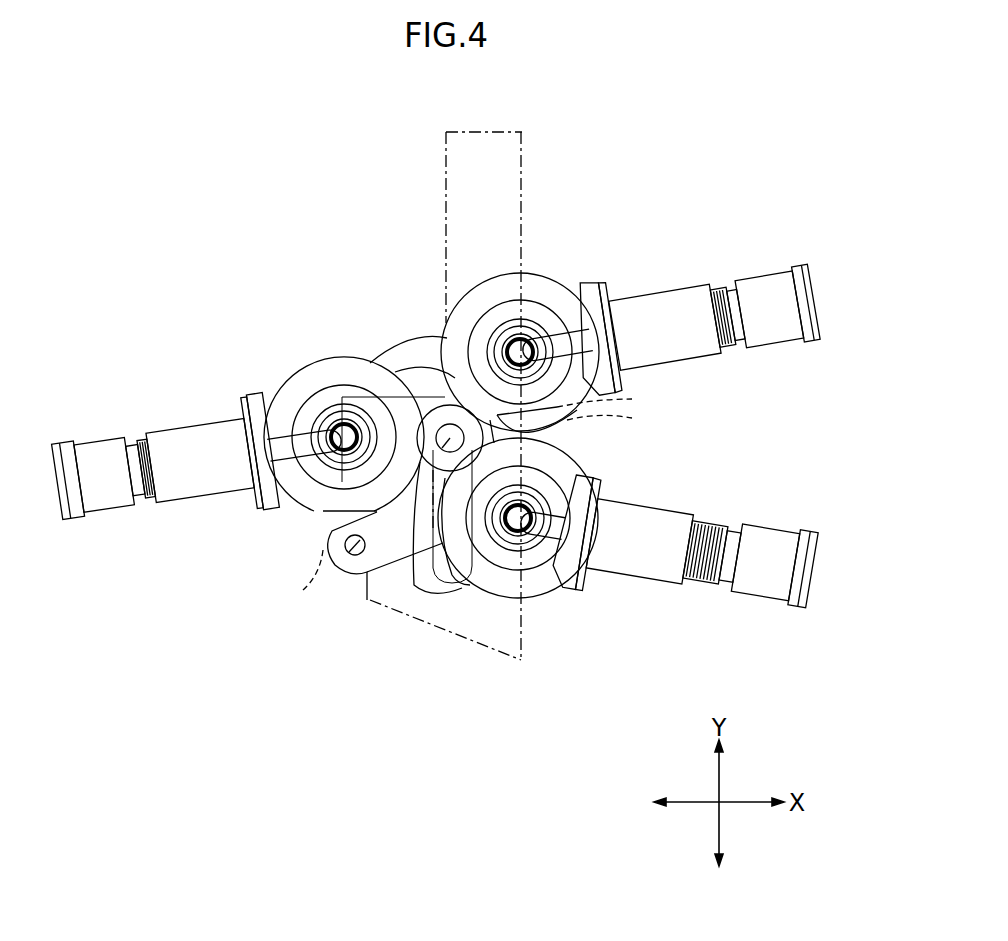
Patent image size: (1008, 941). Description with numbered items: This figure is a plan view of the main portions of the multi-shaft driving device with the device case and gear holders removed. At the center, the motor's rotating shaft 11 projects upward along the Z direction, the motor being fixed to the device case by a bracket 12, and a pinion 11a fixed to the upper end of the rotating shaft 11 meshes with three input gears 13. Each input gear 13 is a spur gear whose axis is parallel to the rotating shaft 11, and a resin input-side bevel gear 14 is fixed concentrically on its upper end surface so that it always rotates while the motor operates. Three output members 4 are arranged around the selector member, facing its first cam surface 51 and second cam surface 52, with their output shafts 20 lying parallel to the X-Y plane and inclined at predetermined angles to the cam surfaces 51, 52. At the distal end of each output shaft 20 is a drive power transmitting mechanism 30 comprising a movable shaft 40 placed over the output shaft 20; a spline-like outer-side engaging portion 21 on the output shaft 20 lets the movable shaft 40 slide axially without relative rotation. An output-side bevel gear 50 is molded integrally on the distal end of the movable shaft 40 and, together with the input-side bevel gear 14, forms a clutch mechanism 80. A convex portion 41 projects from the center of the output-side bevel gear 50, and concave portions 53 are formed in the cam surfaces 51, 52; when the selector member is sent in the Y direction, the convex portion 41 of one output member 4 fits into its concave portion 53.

The output member 4 is at (808, 245).
The rotating shaft 11 is at (380, 461).
The pinion 11a is at (428, 395).
The bracket 12 is at (360, 598).
The input gear 13 is at (540, 300).
The input-side bevel gear 14 is at (488, 325).
The output shaft 20 is at (758, 290).
The outer-side engaging portion 21 is at (716, 290).
The drive power transmitting mechanism 30 is at (626, 276).
The movable shaft 40 is at (660, 300).
The convex portion 41 is at (518, 330).
The output-side bevel gear 50 is at (590, 310).
The first cam surface 51 is at (530, 664).
The second cam surface 52 is at (326, 562).
The concave portion 53 is at (632, 402).
The clutch mechanism 80 is at (600, 262).